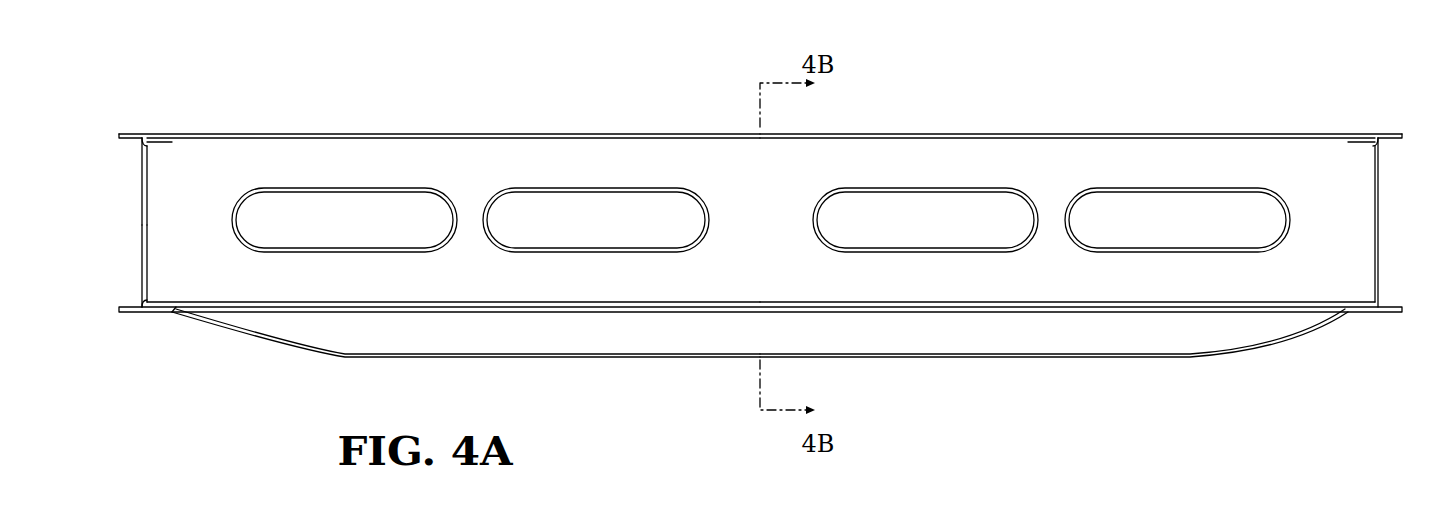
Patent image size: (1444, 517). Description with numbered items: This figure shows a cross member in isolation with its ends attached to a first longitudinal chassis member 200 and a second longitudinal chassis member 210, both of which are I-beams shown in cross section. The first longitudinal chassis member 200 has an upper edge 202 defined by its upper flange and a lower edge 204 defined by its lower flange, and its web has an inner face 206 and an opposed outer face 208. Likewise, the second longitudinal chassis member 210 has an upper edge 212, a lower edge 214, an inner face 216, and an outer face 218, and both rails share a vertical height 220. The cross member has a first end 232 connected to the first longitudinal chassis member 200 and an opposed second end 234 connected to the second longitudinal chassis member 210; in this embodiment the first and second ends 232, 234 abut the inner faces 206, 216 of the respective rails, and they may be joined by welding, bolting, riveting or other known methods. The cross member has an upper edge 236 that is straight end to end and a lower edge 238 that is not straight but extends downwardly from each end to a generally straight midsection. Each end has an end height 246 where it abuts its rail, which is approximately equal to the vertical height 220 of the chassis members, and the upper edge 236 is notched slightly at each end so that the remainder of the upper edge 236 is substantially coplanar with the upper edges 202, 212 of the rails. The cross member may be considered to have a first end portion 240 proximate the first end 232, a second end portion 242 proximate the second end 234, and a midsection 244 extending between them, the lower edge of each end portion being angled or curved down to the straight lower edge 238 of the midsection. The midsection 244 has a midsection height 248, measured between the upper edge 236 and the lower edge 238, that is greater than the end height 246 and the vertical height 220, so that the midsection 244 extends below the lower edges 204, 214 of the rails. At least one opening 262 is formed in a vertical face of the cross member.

The first longitudinal chassis member 200 is at (1388, 133).
The upper edge 202 is at (1373, 133).
The lower edge 204 is at (1390, 314).
The inner face 206 is at (1377, 196).
The outer face 208 is at (1378, 236).
The second longitudinal chassis member 210 is at (133, 133).
The upper edge 212 is at (155, 131).
The lower edge 214 is at (147, 316).
The inner face 216 is at (166, 309).
The outer face 218 is at (143, 283).
The vertical height 220 is at (82, 134).
The first end 232 is at (1290, 133).
The second end 234 is at (210, 133).
The upper edge 236 is at (1050, 133).
The lower edge 238 is at (1072, 358).
The first end portion 240 is at (1235, 288).
The second end portion 242 is at (211, 282).
The midsection 244 is at (683, 358).
The end height 246 is at (172, 142).
The midsection height 248 is at (760, 138).
The opening 262 is at (912, 203).